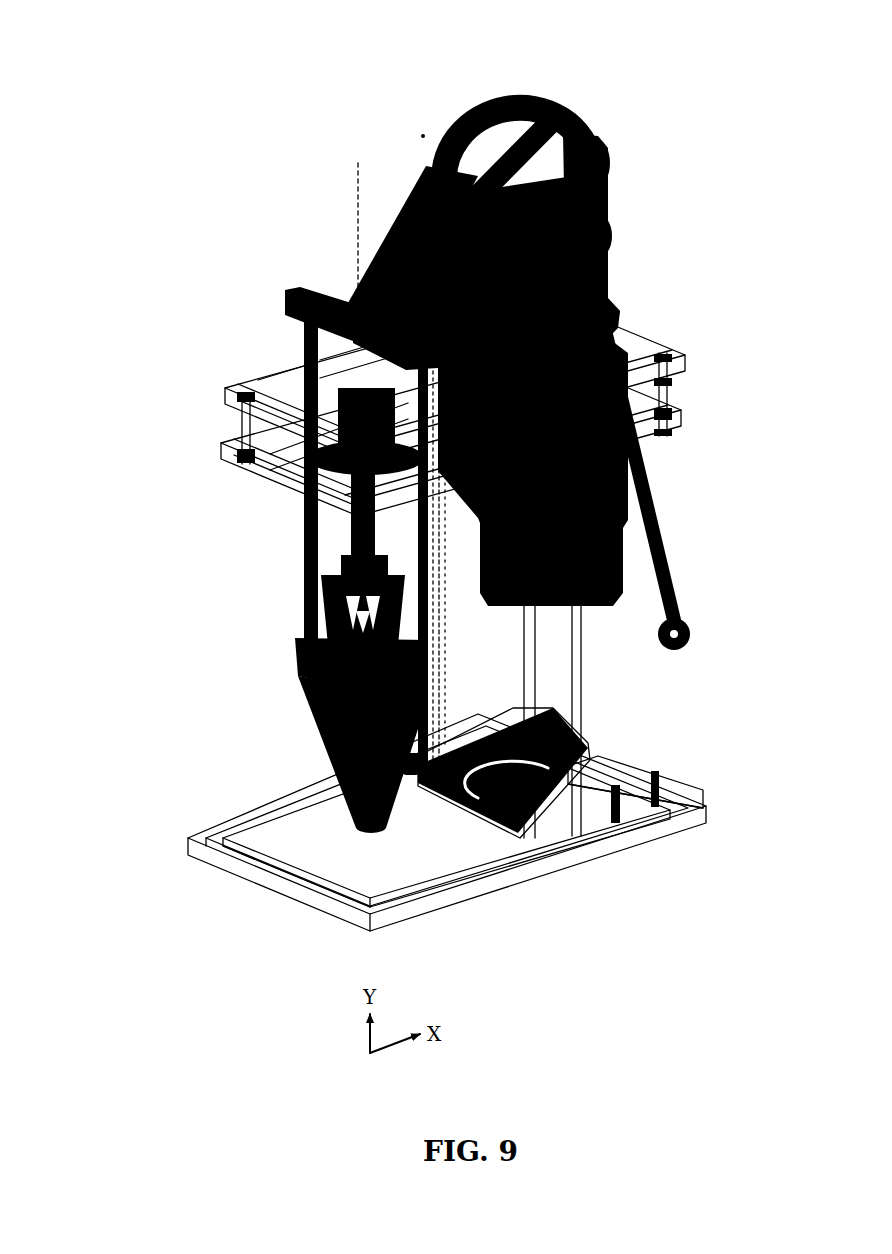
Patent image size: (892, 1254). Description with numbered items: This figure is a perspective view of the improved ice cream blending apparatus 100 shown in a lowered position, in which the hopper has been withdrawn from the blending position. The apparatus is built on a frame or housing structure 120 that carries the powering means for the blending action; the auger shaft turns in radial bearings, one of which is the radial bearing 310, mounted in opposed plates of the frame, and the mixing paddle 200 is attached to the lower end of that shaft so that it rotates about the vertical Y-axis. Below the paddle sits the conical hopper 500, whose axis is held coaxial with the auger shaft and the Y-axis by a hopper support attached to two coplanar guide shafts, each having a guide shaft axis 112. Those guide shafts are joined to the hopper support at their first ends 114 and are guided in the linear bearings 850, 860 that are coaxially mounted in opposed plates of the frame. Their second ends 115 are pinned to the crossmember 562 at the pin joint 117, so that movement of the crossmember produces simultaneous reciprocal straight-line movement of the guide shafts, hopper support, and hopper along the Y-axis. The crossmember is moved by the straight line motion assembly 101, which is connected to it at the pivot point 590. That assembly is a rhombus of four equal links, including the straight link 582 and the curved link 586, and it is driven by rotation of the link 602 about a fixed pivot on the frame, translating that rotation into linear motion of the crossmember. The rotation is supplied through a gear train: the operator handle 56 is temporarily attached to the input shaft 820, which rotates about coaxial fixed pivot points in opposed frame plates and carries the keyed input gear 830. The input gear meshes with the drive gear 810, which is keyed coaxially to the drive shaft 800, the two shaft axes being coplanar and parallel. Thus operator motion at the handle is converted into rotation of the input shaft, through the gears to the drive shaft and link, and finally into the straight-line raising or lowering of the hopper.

The ice cream blending apparatus 100 is at (786, 213).
The straight line motion assembly 101 is at (413, 124).
The guide shaft axis 112 is at (347, 165).
The first ends of hopper guide shafts 114 is at (287, 629).
The second ends of hopper guide shafts 115 is at (288, 318).
The pin joint 117 is at (252, 368).
The frame 120 is at (690, 352).
The mixing paddle 200 is at (297, 565).
The radial bearing 310 is at (262, 446).
The conical hopper 500 is at (327, 749).
The operator handle 56 is at (679, 639).
The crossmember 562 is at (274, 291).
The link 582 is at (375, 240).
The link 586 is at (519, 139).
The pivot point 590 is at (294, 345).
The link 602 is at (657, 117).
The drive shaft 800 is at (590, 173).
The drive gear 810 is at (590, 226).
The input shaft 820 is at (396, 221).
The input gear 830 is at (577, 255).
The linear bearing 850 is at (578, 598).
The linear bearing 860 is at (530, 602).